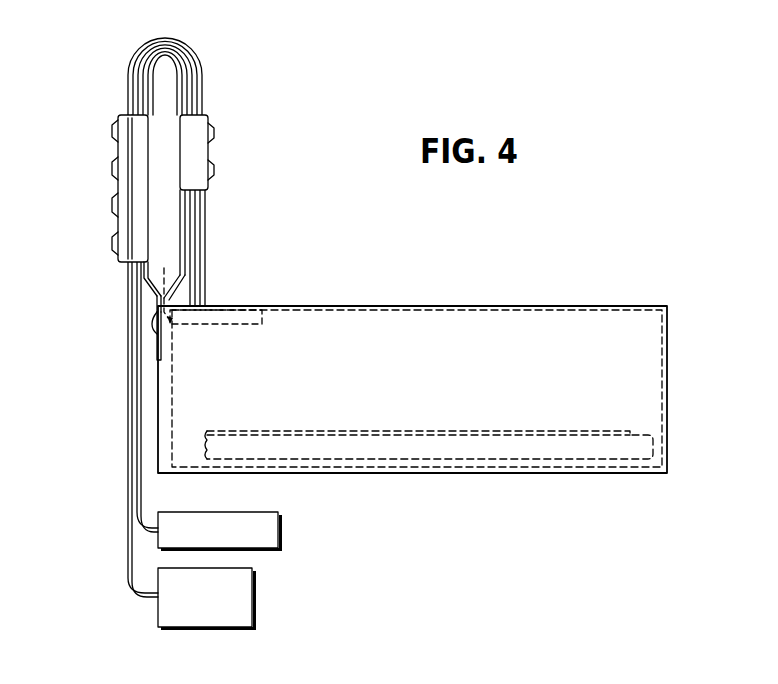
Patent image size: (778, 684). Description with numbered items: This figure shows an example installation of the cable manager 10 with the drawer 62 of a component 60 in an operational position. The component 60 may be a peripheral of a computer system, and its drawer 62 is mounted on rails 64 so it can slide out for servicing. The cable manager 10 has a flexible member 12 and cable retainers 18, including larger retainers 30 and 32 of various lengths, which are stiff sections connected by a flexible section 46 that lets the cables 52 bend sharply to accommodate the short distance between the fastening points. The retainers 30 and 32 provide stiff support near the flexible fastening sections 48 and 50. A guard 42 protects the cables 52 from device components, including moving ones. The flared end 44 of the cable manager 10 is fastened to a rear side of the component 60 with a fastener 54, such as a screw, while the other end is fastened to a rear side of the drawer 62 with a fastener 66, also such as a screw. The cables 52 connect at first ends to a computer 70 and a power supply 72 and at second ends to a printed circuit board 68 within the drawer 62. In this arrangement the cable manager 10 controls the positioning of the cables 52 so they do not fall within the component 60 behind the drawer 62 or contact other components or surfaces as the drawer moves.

The cable manager 10 is at (98, 274).
The flexible member 12 is at (198, 80).
The cable retainers 18 is at (100, 149).
The retainer 30 is at (120, 115).
The retainer 32 is at (208, 188).
The guard 42 is at (143, 283).
The flared end 44 is at (153, 353).
The flexible section 46 is at (183, 102).
The flexible end section 48 is at (153, 298).
The flexible end section 50 is at (172, 295).
The cables 52 is at (168, 37).
The fastener 54 is at (152, 325).
The component 60 is at (623, 307).
The drawer 62 is at (548, 307).
The rails 64 is at (407, 452).
The fastener 66 is at (165, 285).
The printed circuit board 68 is at (265, 306).
The computer 70 is at (283, 530).
The power supply 72 is at (257, 596).